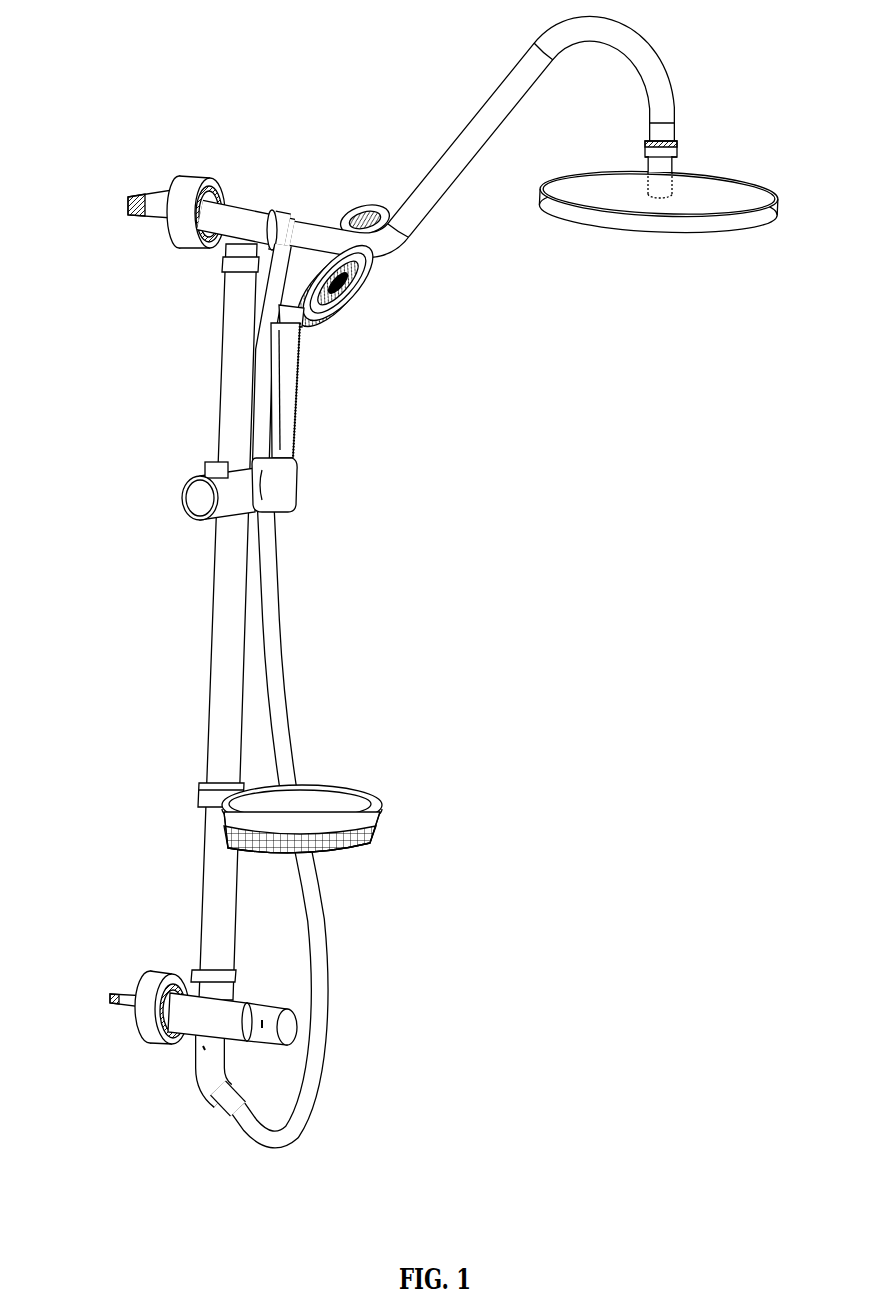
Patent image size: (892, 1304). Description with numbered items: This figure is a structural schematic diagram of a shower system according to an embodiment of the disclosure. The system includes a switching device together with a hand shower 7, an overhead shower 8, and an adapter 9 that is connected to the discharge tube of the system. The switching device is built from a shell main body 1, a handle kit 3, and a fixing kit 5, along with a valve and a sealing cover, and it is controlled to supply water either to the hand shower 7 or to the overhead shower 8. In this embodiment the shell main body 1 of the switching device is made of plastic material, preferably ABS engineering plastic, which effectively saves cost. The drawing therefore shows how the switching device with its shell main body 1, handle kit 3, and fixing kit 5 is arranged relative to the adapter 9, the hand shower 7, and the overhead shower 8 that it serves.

The shell main body 1 is at (207, 1024).
The handle kit 3 is at (290, 1027).
The fixing kit 5 is at (203, 651).
The hand shower 7 is at (299, 412).
The overhead shower 8 is at (593, 232).
The adapter 9 is at (249, 206).